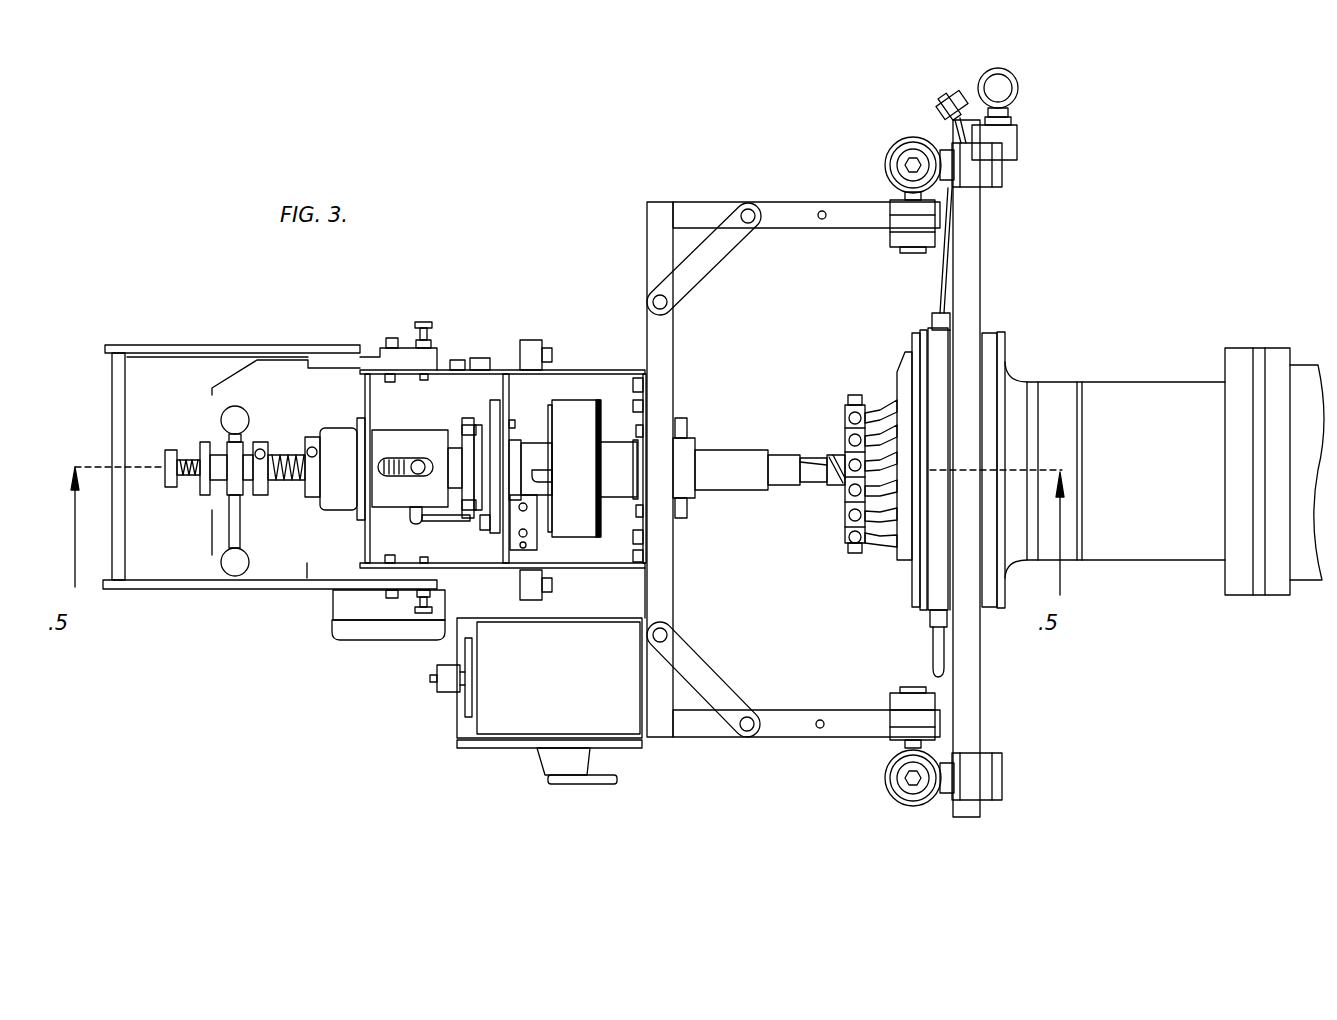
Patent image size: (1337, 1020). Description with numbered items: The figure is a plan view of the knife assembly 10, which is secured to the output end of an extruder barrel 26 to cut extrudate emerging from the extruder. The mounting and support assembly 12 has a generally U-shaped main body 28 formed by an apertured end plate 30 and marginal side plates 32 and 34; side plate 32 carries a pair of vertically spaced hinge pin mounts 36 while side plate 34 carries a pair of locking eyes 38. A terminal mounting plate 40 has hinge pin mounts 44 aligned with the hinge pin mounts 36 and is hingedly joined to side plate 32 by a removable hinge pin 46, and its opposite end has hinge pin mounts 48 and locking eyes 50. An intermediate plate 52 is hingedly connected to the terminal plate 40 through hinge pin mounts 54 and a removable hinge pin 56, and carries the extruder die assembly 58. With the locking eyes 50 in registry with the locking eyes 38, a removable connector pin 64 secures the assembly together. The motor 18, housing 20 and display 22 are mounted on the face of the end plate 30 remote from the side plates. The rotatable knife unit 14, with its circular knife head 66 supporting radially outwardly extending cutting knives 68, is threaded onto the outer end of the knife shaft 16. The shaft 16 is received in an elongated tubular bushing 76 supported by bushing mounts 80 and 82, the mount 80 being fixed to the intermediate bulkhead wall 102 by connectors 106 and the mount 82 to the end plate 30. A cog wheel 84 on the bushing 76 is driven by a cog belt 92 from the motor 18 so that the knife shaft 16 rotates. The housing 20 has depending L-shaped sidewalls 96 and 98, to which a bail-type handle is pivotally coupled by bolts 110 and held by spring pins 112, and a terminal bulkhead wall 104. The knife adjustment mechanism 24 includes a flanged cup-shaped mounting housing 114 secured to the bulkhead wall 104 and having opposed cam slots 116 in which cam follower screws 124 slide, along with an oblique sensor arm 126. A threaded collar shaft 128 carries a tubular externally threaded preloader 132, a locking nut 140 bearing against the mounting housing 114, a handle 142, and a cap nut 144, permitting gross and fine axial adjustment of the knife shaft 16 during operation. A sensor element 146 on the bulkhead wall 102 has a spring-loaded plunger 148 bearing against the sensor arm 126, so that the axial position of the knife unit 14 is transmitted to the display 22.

The knife assembly 10 is at (548, 163).
The mounting and support assembly 12 is at (741, 163).
The rotatable knife unit 14 is at (870, 378).
The knife shaft 16 is at (797, 435).
The motor 18 is at (243, 345).
The housing 20 is at (598, 360).
The display 22 is at (452, 763).
The knife adjustment mechanism 24 is at (190, 412).
The extruder barrel 26 is at (1130, 318).
The main body 28 is at (713, 748).
The end plate 30 is at (668, 595).
The side plate 32 is at (782, 738).
The side plate 34 is at (795, 212).
The hinge pin mounts 36 is at (905, 740).
The locking eyes 38 is at (897, 207).
The terminal mounting plate 40 is at (975, 680).
The hinge pin mounts 44 is at (918, 805).
The hinge pin 46 is at (905, 785).
The hinge pin mounts 48 is at (1015, 130).
The locking eyes 50 is at (888, 165).
The intermediate plate 52 is at (940, 282).
The hinge pin mounts 54 is at (947, 96).
The hinge pin 56 is at (1010, 88).
The extruder die assembly 58 is at (900, 608).
The connector pin 64 is at (912, 155).
The knife head 66 is at (842, 520).
The cutting knives 68 is at (895, 555).
The tubular bushing 76 is at (735, 492).
The bushing mount 80 is at (491, 400).
The bushing mount 82 is at (690, 440).
The cog wheel 84 is at (592, 432).
The cog belt 92 is at (580, 398).
The sidewall 96 is at (565, 370).
The sidewall 98 is at (566, 570).
The intermediate bulkhead wall 102 is at (506, 372).
The terminal bulkhead wall 104 is at (365, 560).
The connectors 106 is at (476, 420).
The bolts 110 is at (390, 338).
The spring pins 112 is at (426, 322).
The mounting housing 114 is at (343, 428).
The cam slots 116 is at (428, 475).
The cam follower screws 124 is at (420, 460).
The sensor arm 126 is at (416, 522).
The collar shaft 128 is at (188, 458).
The preloader 132 is at (262, 440).
The locking nut 140 is at (312, 497).
The handle 142 is at (232, 527).
The cap nut 144 is at (206, 487).
The sensor element 146 is at (475, 530).
The plunger 148 is at (440, 518).